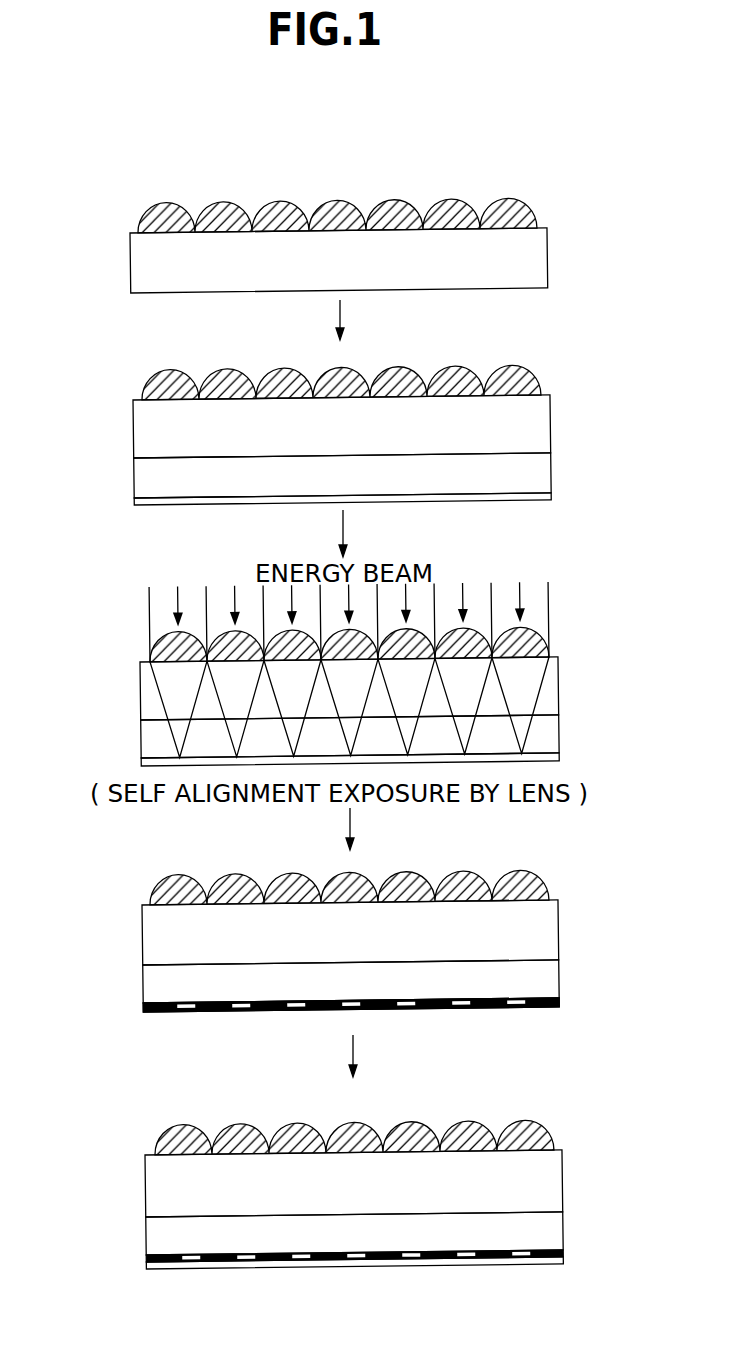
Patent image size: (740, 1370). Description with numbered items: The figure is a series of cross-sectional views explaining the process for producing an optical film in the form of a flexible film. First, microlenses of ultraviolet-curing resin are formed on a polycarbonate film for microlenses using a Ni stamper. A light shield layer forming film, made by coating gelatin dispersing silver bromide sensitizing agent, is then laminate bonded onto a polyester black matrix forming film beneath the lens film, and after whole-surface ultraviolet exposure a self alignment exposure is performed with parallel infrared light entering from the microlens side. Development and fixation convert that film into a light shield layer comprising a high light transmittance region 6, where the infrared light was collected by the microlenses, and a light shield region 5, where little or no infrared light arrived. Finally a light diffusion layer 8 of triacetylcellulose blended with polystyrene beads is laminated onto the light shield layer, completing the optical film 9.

The light shield region 5 is at (351, 1031).
The high light transmittance region 6 is at (351, 1031).
The light diffusion layer 8 is at (355, 1296).
The optical film 9 is at (351, 1209).